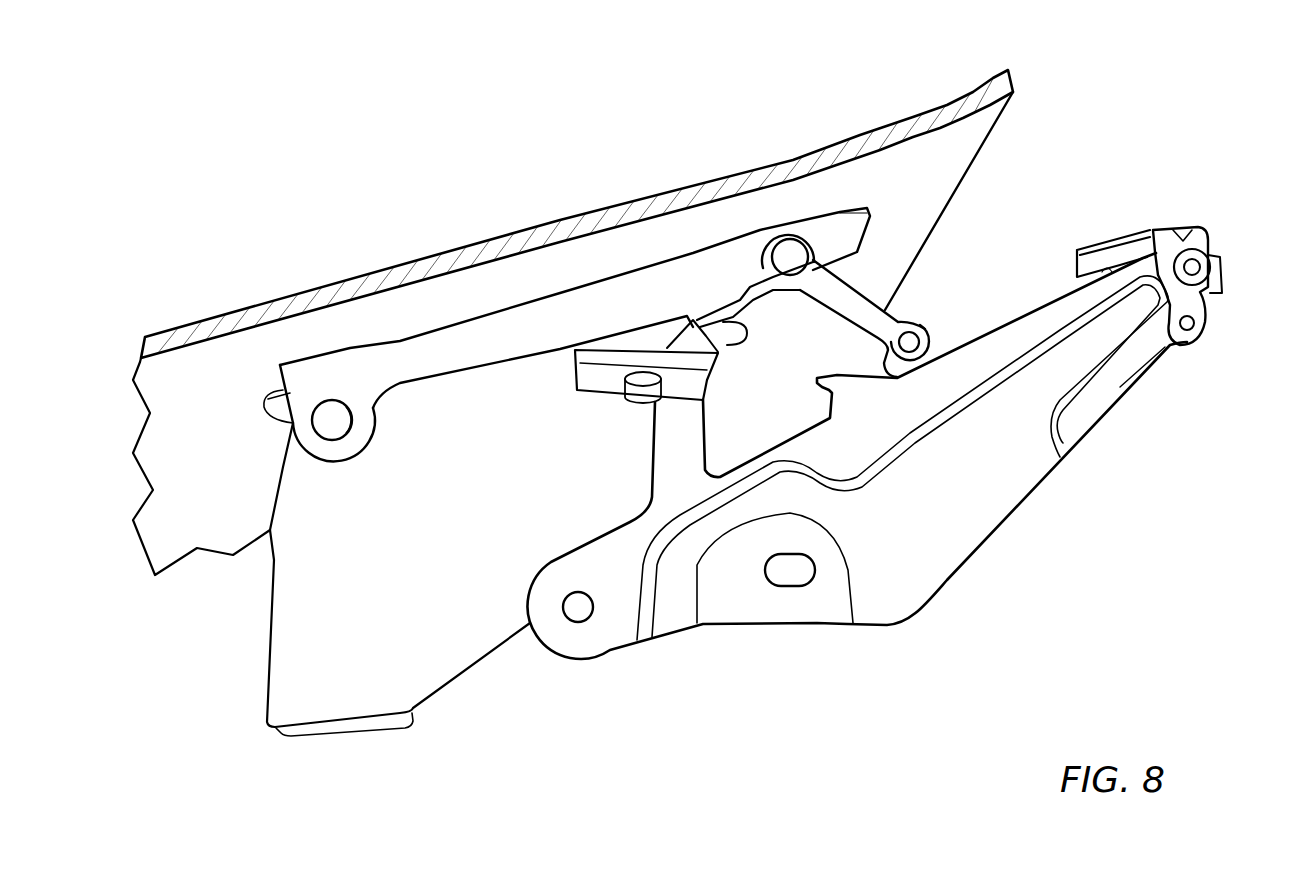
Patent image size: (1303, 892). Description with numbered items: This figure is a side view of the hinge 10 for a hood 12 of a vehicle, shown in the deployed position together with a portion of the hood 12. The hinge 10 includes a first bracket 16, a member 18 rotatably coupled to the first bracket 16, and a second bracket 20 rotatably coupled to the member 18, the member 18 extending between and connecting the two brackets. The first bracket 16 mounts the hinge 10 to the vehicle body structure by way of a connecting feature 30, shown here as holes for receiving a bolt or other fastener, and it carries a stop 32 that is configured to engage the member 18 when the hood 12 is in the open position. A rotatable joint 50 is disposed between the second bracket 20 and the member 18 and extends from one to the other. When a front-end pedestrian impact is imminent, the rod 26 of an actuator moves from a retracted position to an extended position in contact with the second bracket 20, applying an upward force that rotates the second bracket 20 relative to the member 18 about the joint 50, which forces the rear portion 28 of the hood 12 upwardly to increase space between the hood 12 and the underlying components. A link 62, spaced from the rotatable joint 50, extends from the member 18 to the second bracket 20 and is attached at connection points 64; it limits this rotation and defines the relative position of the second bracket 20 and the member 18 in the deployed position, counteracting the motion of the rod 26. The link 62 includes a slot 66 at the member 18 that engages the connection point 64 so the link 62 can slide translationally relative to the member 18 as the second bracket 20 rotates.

The hinge 10 is at (993, 633).
The hood 12 is at (603, 196).
The first bracket 16 is at (985, 505).
The member 18 is at (428, 551).
The second bracket 20 is at (506, 351).
The rod 26 is at (740, 344).
The rear portion 28 is at (455, 214).
The connecting feature 30 is at (580, 612).
The stop 32 is at (1163, 235).
The rotatable joint 50 is at (328, 421).
The link 62 is at (858, 307).
The connection points 64 is at (787, 250).
The slot 66 is at (917, 343).